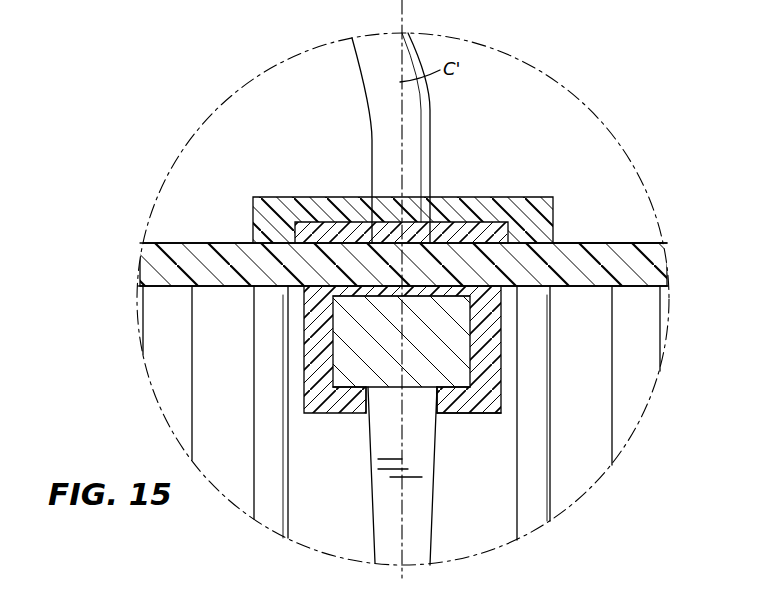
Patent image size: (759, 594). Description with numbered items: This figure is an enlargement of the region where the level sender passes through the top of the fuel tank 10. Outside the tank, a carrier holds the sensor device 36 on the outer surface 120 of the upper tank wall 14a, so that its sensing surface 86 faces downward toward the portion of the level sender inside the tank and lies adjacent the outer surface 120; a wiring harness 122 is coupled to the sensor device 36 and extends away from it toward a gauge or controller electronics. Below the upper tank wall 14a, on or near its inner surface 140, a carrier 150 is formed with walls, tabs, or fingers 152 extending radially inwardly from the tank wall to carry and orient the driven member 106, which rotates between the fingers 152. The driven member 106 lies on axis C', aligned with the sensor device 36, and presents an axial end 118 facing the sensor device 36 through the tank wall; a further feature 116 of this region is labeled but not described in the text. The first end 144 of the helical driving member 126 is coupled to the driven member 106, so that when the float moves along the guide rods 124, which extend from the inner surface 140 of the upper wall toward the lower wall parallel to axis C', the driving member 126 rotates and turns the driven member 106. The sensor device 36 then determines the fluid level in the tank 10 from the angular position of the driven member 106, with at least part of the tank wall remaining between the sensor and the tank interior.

The fuel tank 10 is at (166, 238).
The outer surface 120 is at (221, 243).
The wiring harness 122 is at (370, 90).
The sensor device 36 is at (338, 236).
The sensing surface 86 is at (488, 243).
The upper tank wall 14a is at (630, 243).
The inner surface 140 is at (565, 287).
The axial end 118 is at (386, 299).
The driven member 106 is at (418, 332).
The lower wall of cavity 116 is at (388, 383).
The fingers 152 is at (502, 393).
The first end 144 is at (402, 397).
The carrier 150 is at (462, 414).
The driving member 126 is at (420, 508).
The guide rods 124 is at (258, 470).